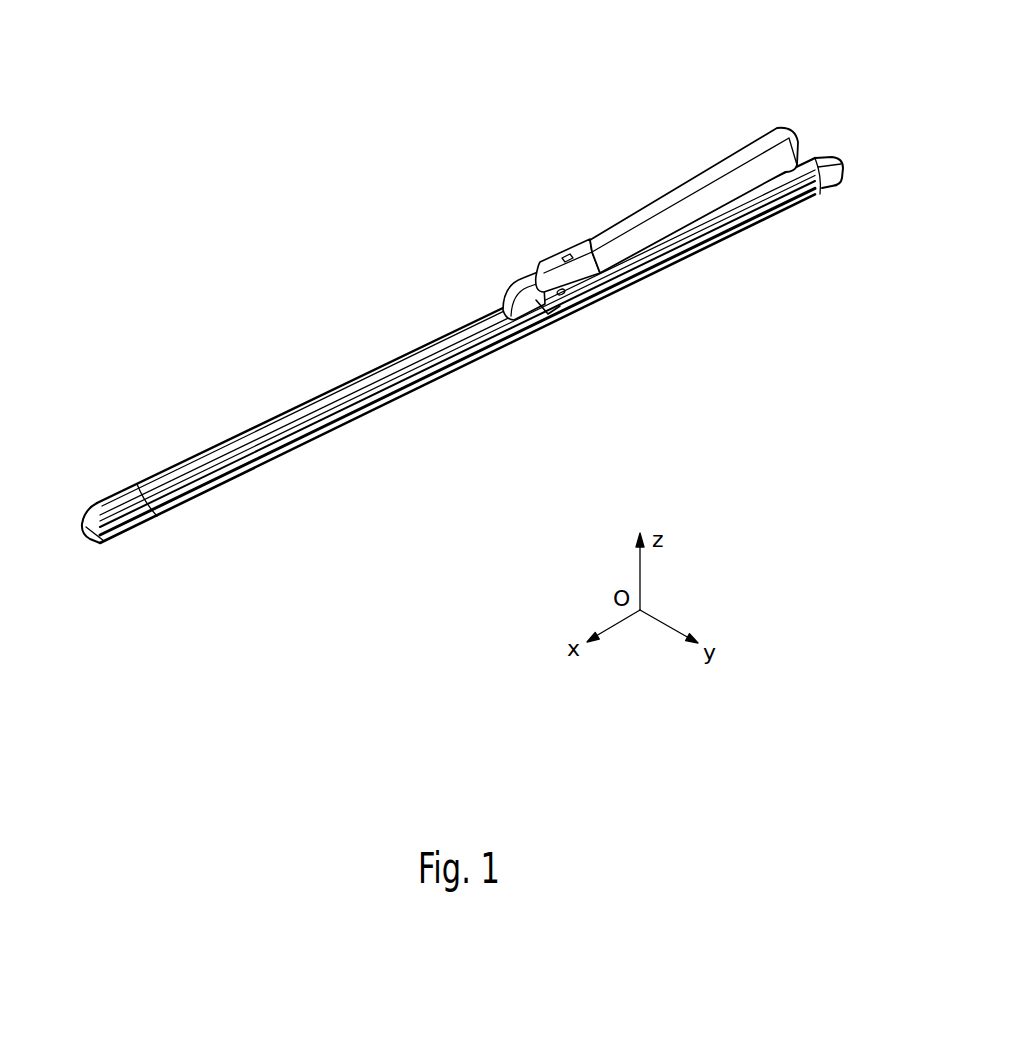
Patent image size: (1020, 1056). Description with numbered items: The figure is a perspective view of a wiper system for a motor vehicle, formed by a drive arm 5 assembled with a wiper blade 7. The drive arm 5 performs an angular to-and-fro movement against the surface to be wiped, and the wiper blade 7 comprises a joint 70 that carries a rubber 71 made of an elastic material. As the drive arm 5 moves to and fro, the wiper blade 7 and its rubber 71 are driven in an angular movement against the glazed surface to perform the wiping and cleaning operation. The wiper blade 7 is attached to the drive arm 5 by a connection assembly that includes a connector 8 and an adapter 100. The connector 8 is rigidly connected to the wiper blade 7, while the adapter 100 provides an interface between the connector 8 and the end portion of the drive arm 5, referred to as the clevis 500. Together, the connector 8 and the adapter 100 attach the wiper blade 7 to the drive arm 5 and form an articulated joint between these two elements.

The drive arm 5 is at (679, 172).
The wiper blade 7 is at (462, 350).
The connector 8 is at (547, 316).
The joint 70 is at (197, 458).
The rubber 71 is at (378, 412).
The adapter 100 is at (500, 294).
The clevis 500 is at (546, 264).